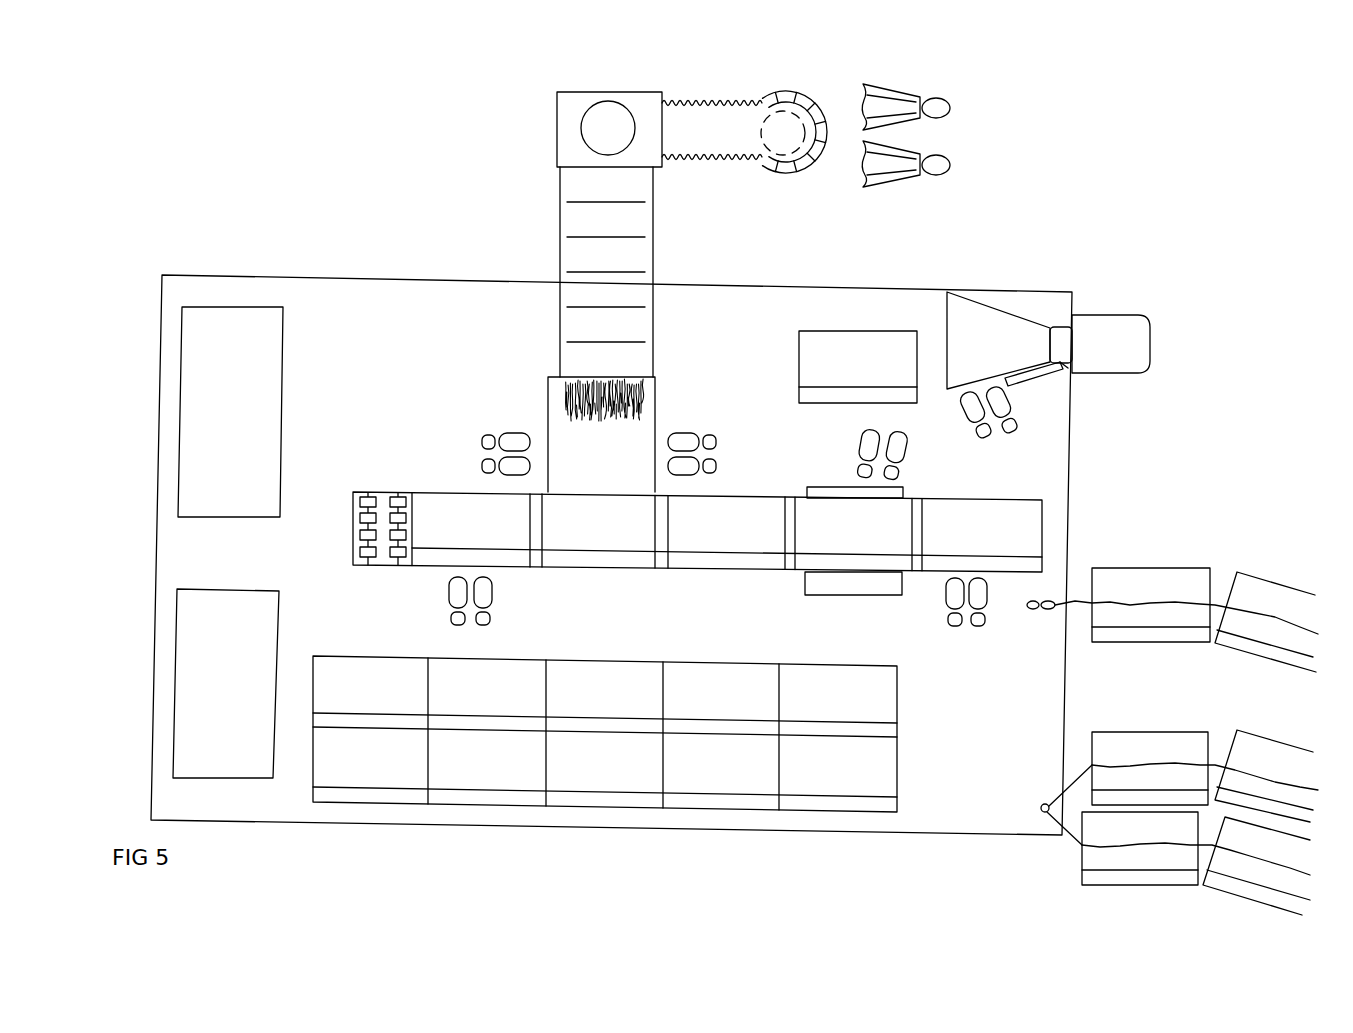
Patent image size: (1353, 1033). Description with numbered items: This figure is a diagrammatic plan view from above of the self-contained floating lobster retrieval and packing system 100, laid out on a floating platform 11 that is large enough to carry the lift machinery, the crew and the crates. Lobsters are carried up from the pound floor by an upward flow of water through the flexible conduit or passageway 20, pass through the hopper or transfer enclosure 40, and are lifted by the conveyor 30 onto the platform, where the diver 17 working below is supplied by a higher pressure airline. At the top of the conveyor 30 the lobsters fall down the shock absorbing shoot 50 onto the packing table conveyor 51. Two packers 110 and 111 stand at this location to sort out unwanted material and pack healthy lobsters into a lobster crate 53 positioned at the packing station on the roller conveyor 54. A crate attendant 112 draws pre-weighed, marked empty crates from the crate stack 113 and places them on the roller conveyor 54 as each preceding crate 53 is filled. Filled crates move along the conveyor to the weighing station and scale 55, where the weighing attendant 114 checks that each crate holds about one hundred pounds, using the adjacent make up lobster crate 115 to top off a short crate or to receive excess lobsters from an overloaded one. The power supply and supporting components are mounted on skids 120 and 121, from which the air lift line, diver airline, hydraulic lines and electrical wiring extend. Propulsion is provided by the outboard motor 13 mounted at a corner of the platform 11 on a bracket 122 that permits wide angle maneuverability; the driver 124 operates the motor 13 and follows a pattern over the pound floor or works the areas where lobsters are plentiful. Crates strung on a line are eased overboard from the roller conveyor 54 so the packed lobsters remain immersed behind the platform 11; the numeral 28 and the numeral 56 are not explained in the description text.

The self-contained floating lobster retrieval and packing system 100 is at (332, 148).
The floating platform 11 is at (300, 275).
The outboard motor 13 is at (1130, 313).
The diver 17 is at (925, 95).
The flexible conduit or passageway 20 is at (716, 98).
The reel 28 is at (798, 96).
The conveyor 30 is at (655, 240).
The hopper 40 is at (607, 90).
The shock absorbing shoot 50 is at (630, 393).
The packing table conveyor 51 is at (545, 393).
The lobster crate 53 is at (620, 573).
The roller conveyor 54 is at (380, 490).
The weighing station and scale 55 is at (847, 597).
The loading station 56 is at (1149, 568).
The packer 110 is at (482, 437).
The packer 111 is at (699, 434).
The crate attendant 112 is at (450, 600).
The crate stack 113 is at (980, 630).
The weighing attendant 114 is at (856, 461).
The make up lobster crate 115 is at (851, 330).
The skid 120 is at (180, 392).
The skid 121 is at (178, 672).
The bracket 122 is at (1006, 305).
The driver 124 is at (1010, 410).